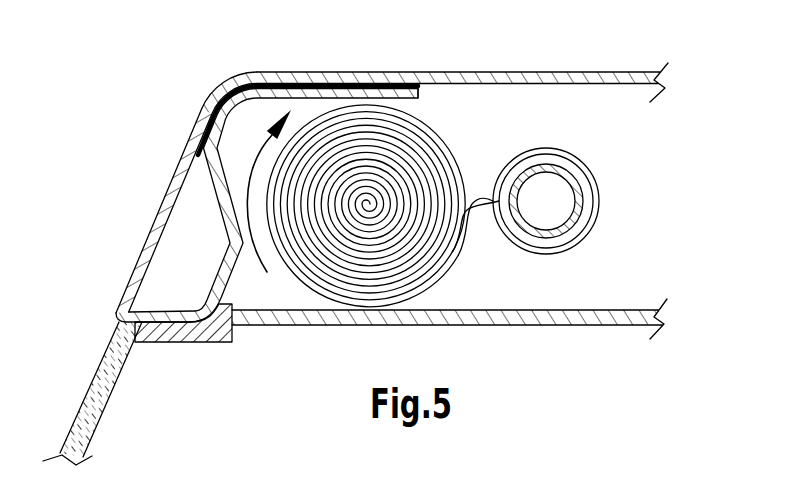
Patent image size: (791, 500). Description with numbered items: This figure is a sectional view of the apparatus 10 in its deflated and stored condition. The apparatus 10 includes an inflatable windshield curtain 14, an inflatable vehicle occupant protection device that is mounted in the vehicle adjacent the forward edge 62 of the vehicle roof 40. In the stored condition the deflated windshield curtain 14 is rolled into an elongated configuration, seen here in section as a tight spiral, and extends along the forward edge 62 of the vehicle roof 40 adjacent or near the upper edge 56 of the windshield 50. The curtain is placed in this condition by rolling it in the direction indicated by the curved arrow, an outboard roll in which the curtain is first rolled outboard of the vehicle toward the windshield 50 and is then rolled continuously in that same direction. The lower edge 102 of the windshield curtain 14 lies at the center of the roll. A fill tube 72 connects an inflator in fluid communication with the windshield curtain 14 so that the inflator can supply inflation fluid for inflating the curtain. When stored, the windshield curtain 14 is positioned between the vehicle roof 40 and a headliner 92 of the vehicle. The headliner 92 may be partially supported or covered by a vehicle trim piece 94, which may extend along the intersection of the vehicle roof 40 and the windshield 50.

The apparatus 10 is at (646, 151).
The inflatable windshield curtain 14 is at (373, 268).
The vehicle roof 40 is at (567, 82).
The windshield 50 is at (101, 371).
The upper edge of the windshield 56 is at (117, 333).
The forward edge of the vehicle roof 62 is at (146, 248).
The fill tube 72 is at (545, 171).
The headliner 92 is at (478, 323).
The vehicle trim piece 94 is at (187, 340).
The lower edge of the curtain 102 is at (372, 200).